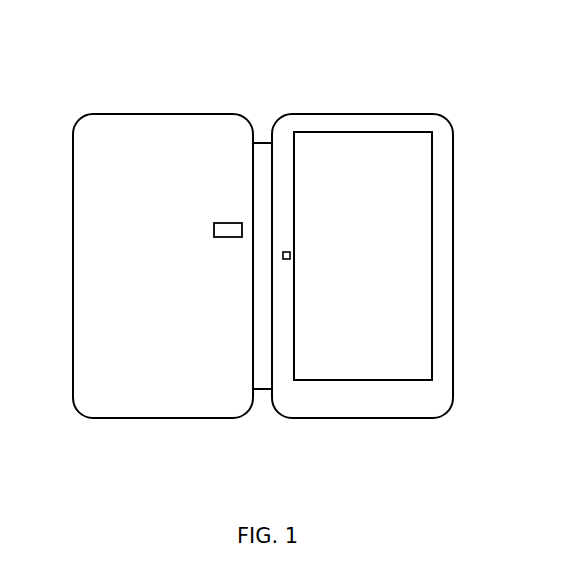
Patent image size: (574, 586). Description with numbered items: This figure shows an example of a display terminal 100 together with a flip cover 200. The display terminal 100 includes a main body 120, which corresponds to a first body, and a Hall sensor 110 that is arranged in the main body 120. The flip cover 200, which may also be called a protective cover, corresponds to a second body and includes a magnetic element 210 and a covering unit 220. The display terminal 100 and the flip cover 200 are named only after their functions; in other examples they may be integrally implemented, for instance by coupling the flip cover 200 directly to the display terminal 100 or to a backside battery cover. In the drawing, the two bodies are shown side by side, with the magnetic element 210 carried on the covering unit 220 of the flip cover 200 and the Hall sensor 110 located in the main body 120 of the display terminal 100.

The display terminal 100 is at (352, 101).
The Hall sensor 110 is at (290, 256).
The main body 120 is at (365, 419).
The flip cover 200 is at (155, 101).
The magnetic element 210 is at (214, 230).
The covering unit 220 is at (165, 419).